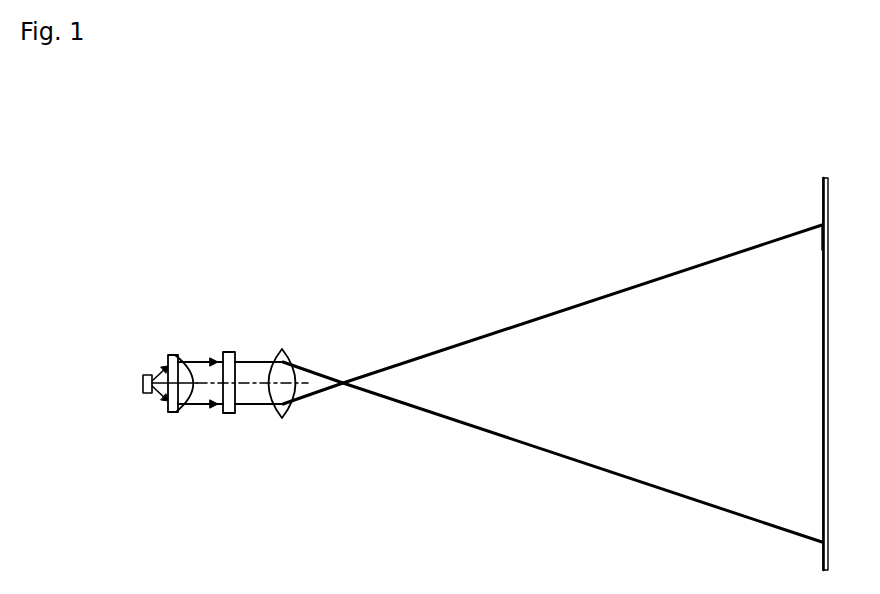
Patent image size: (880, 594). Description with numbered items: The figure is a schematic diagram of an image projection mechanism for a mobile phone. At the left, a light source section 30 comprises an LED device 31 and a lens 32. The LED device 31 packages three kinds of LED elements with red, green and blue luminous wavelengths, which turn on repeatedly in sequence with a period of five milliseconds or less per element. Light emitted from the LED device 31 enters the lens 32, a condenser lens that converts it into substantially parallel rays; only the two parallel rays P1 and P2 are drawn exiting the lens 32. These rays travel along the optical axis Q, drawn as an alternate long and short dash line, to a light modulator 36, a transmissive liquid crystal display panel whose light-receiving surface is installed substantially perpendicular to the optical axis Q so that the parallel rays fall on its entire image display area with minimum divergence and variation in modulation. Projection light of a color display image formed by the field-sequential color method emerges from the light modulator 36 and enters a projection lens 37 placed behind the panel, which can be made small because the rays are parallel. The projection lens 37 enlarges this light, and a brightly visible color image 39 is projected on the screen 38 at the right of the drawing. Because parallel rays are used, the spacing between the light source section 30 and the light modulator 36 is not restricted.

The light source section 30 is at (195, 250).
The LED device 31 is at (147, 374).
The lens 32 is at (175, 355).
The light modulator 36 is at (230, 352).
The projection lens 37 is at (282, 349).
The screen 38 is at (825, 178).
The image 39 is at (822, 250).
The parallel ray P1 is at (190, 406).
The optical axis Q is at (198, 388).
The parallel ray P2 is at (206, 405).